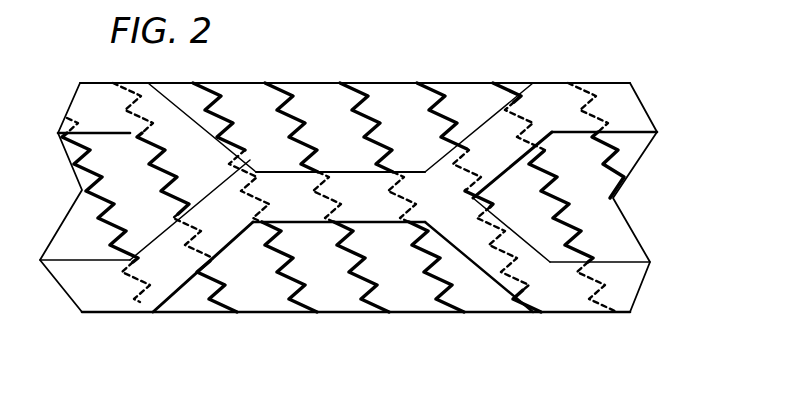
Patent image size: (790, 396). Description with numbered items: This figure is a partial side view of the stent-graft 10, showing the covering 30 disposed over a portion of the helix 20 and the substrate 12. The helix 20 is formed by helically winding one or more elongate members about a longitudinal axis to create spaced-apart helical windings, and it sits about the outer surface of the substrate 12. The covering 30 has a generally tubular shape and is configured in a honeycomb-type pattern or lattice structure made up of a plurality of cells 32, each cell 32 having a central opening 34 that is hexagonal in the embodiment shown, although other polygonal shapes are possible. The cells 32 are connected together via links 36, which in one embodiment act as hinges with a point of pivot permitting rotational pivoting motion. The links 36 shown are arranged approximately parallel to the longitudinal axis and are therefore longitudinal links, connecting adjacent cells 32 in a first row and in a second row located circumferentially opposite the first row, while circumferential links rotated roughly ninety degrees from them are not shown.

The stent-graft 10 is at (570, 56).
The substrate 12 is at (257, 299).
The helix 20 is at (367, 116).
The covering 30 is at (563, 279).
The cell 32 is at (627, 101).
The central opening 34 is at (613, 230).
The link 36 is at (352, 183).